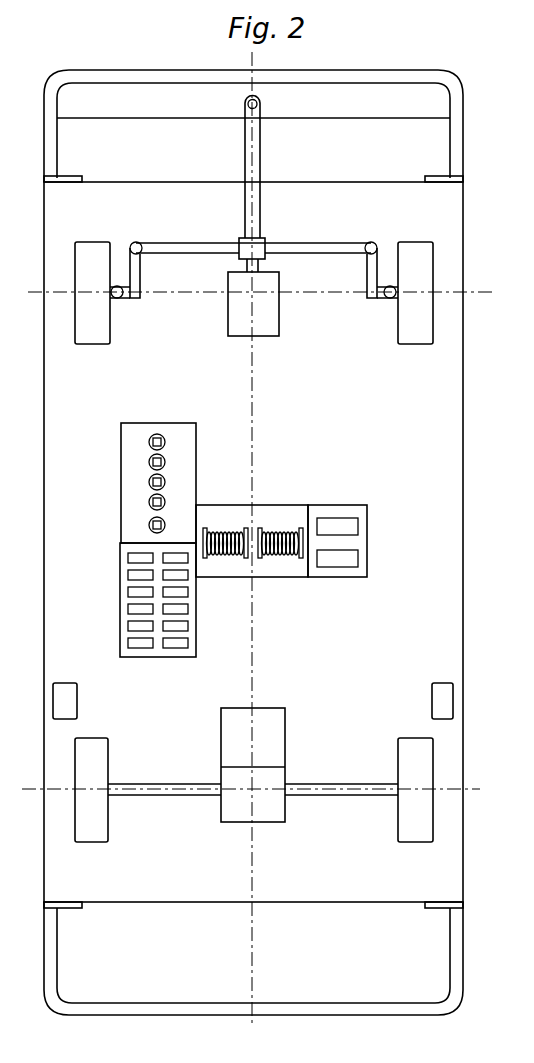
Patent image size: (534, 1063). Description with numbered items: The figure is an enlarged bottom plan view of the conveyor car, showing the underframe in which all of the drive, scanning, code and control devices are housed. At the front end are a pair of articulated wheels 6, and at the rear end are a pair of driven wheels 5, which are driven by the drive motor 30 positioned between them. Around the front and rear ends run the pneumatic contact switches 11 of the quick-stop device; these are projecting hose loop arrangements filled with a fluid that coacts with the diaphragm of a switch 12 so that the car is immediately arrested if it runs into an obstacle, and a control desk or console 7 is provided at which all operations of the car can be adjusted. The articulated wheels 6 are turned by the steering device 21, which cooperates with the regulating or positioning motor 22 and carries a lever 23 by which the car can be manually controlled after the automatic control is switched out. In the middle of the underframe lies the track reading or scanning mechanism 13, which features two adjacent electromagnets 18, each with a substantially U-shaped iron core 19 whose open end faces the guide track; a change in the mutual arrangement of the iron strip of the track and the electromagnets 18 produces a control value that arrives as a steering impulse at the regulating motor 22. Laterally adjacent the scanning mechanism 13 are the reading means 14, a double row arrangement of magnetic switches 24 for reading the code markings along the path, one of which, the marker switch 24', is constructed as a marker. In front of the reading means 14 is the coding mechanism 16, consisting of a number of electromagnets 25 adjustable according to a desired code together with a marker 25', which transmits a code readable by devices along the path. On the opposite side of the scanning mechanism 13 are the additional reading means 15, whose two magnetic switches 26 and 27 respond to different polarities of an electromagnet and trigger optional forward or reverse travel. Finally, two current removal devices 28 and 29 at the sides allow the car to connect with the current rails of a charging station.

The driven wheels 5 is at (93, 842).
The articulated wheels 6 is at (90, 242).
The control desk or console 7 is at (447, 146).
The pneumatic contact switches 11 is at (463, 88).
The switch 12 is at (463, 180).
The track reading or scanning mechanism 13 is at (275, 502).
The reading means 14 is at (117, 589).
The additional reading means 15 is at (338, 506).
The coding mechanism 16 is at (125, 449).
The electromagnets 18 is at (270, 556).
The U-shaped iron core 19 is at (258, 528).
The steering device 21 is at (321, 250).
The regulating or positioning motor 22 is at (279, 322).
The lever 23 is at (258, 104).
The magnetic switches 24 is at (135, 592).
The marker magnetic switch 24' is at (159, 670).
The electromagnets 25 is at (167, 452).
The marker 25' is at (124, 530).
The magnetic switch 26 is at (358, 527).
The magnetic switch 27 is at (358, 558).
The current removal device 28 is at (453, 700).
The current removal device 29 is at (53, 700).
The drive motor 30 is at (285, 738).